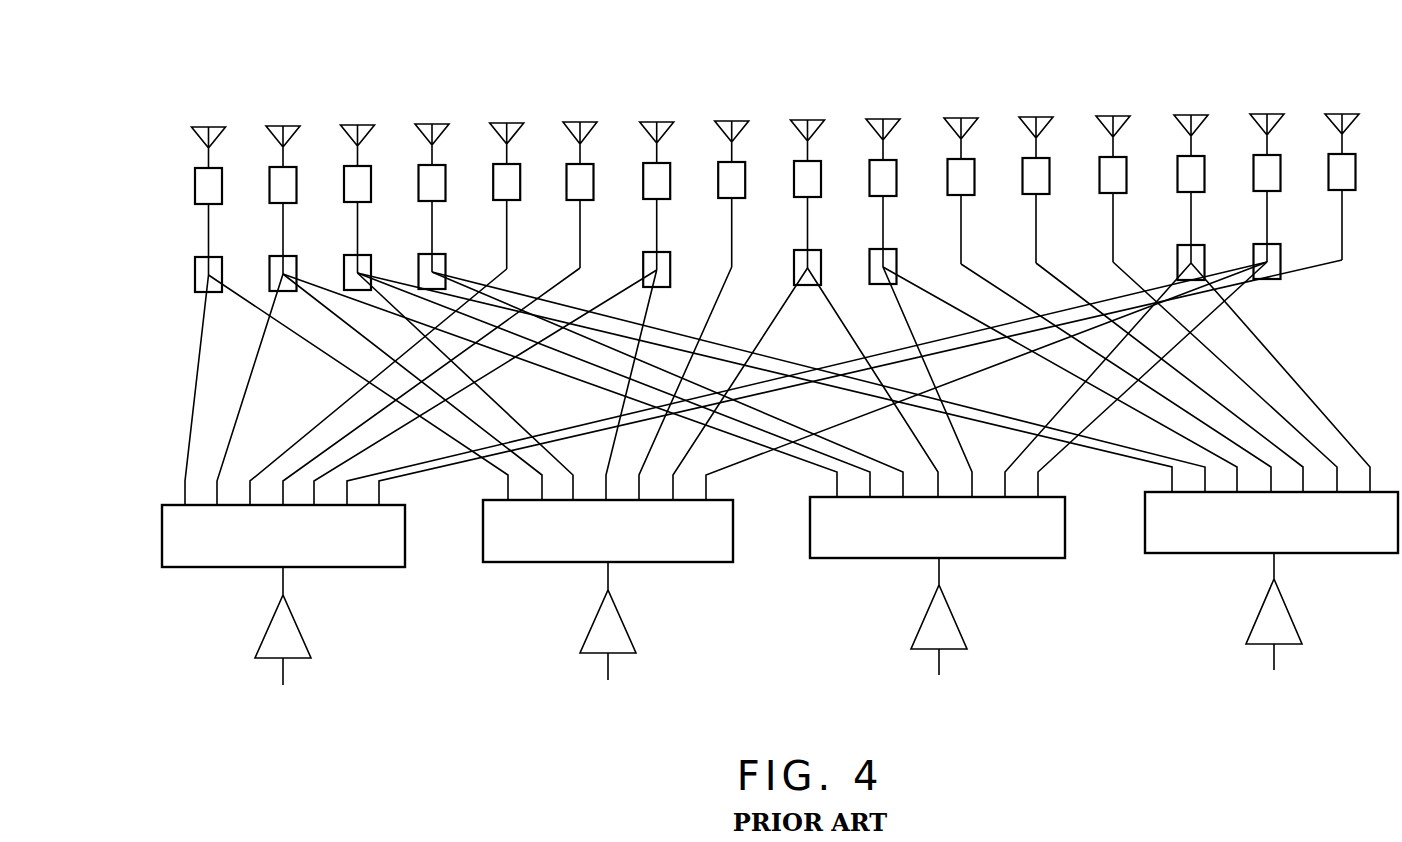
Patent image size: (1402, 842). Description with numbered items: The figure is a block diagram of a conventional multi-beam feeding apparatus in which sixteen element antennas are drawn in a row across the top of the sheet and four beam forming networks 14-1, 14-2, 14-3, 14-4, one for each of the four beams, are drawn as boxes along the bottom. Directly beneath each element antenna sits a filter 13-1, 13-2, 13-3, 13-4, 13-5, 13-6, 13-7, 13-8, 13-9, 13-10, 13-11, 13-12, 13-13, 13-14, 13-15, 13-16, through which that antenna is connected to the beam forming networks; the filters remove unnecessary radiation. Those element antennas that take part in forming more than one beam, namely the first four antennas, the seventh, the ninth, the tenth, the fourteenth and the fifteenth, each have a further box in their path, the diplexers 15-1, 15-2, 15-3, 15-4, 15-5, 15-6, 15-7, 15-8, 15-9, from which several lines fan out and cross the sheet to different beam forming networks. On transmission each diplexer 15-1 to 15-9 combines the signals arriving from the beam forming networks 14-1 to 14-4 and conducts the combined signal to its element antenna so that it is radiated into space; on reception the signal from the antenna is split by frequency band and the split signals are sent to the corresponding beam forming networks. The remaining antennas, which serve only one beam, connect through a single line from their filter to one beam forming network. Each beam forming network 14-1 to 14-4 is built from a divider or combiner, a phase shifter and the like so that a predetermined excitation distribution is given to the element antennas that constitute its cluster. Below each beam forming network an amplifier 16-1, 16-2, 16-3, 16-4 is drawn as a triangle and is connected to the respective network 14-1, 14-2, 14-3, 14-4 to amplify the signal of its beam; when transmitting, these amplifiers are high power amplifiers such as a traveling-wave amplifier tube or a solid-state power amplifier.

The filter 13-1 is at (196, 168).
The filter 13-2 is at (271, 167).
The filter 13-3 is at (346, 166).
The filter 13-4 is at (420, 165).
The filter 13-5 is at (495, 164).
The filter 13-6 is at (568, 164).
The filter 13-7 is at (645, 163).
The filter 13-8 is at (720, 162).
The filter 13-9 is at (796, 161).
The filter 13-10 is at (871, 160).
The filter 13-11 is at (949, 159).
The filter 13-12 is at (1024, 158).
The filter 13-13 is at (1101, 157).
The filter 13-14 is at (1179, 156).
The filter 13-15 is at (1255, 155).
The filter 13-16 is at (1330, 154).
The diplexer 15-1 is at (198, 257).
The diplexer 15-2 is at (273, 256).
The diplexer 15-3 is at (348, 255).
The diplexer 15-4 is at (422, 254).
The diplexer 15-5 is at (647, 252).
The diplexer 15-6 is at (798, 250).
The diplexer 15-7 is at (873, 249).
The diplexer 15-8 is at (1181, 245).
The diplexer 15-9 is at (1257, 244).
The beam forming network 14-1 is at (372, 568).
The beam forming network 14-2 is at (705, 562).
The beam forming network 14-3 is at (1037, 558).
The beam forming network 14-4 is at (1372, 553).
The amplifier 16-1 is at (268, 630).
The amplifier 16-2 is at (592, 625).
The amplifier 16-3 is at (923, 620).
The amplifier 16-4 is at (1258, 614).